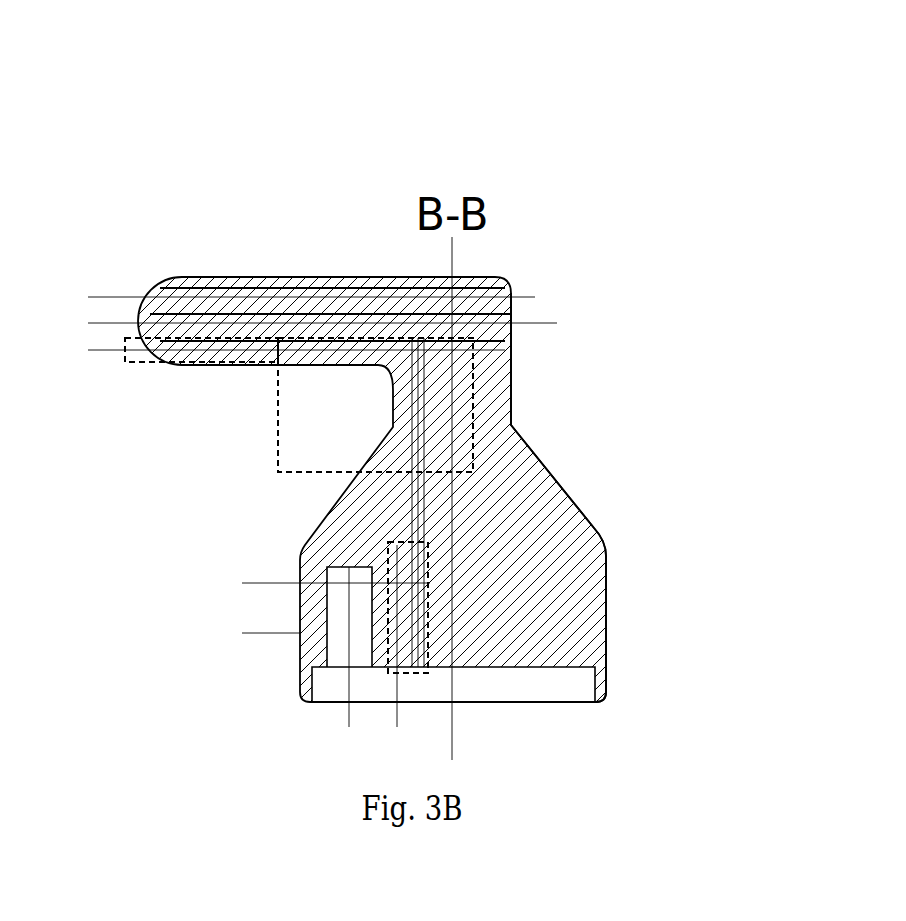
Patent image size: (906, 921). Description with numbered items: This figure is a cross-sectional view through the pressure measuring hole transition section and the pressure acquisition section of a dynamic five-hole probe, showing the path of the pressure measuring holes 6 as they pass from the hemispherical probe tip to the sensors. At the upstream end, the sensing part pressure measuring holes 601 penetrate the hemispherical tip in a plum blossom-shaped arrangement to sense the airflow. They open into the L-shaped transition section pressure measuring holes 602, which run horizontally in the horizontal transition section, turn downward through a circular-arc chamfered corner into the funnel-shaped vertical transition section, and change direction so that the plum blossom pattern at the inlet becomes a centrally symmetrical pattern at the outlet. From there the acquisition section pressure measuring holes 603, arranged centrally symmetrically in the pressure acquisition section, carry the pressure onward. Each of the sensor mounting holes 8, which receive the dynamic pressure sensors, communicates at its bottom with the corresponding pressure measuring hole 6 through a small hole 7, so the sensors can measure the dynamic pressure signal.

The pressure measuring hole 6 is at (723, 110).
The sensing part pressure measuring hole 601 is at (168, 340).
The L-shaped transition section pressure measuring hole 602 is at (312, 340).
The acquisition section pressure measuring hole 603 is at (520, 445).
The small hole 7 is at (378, 578).
The sensor mounting hole 8 is at (327, 637).